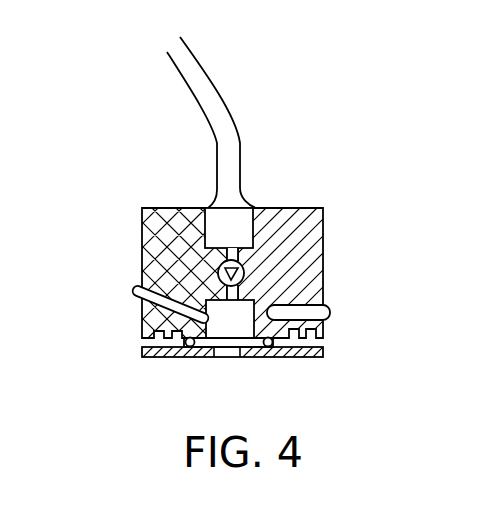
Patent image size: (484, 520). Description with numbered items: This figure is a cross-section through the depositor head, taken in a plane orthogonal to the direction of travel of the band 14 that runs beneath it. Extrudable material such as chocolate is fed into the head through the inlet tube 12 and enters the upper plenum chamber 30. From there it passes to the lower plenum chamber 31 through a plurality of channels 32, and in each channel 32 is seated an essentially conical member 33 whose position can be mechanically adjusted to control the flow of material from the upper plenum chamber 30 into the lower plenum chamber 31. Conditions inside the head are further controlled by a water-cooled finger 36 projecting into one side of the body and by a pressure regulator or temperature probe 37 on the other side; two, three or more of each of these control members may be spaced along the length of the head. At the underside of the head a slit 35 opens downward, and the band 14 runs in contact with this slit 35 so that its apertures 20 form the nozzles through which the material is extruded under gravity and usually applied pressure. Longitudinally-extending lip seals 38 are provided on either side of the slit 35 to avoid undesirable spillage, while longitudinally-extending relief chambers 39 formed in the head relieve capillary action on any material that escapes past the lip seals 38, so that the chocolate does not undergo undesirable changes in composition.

The tube 12 is at (203, 64).
The upper plenum chamber 30 is at (252, 210).
The channel 32 is at (218, 270).
The conical member 33 is at (218, 268).
The lower plenum chamber 31 is at (258, 298).
The finger 36 is at (128, 296).
The pressure regulator or temperature probe 37 is at (330, 312).
The slit 35 is at (185, 348).
The relief chamber 39 is at (143, 350).
The lip seal 38 is at (270, 348).
The band 14 is at (323, 357).
The aperture 20 is at (238, 352).